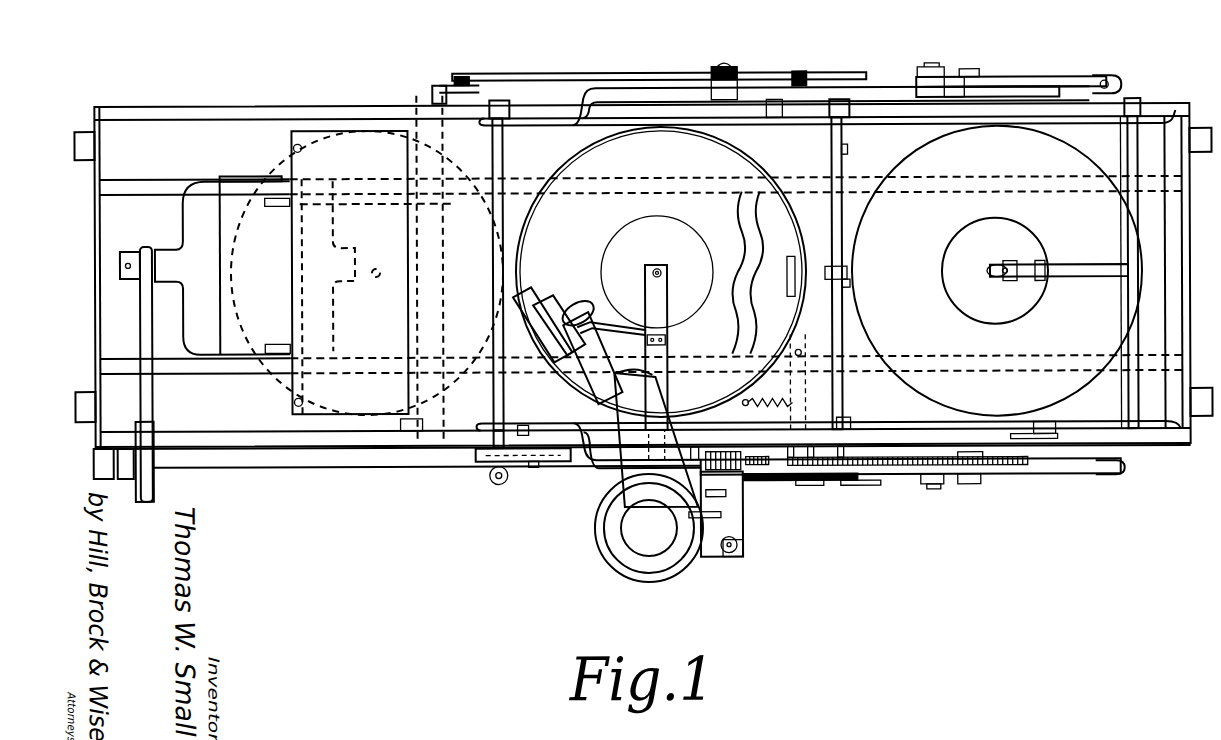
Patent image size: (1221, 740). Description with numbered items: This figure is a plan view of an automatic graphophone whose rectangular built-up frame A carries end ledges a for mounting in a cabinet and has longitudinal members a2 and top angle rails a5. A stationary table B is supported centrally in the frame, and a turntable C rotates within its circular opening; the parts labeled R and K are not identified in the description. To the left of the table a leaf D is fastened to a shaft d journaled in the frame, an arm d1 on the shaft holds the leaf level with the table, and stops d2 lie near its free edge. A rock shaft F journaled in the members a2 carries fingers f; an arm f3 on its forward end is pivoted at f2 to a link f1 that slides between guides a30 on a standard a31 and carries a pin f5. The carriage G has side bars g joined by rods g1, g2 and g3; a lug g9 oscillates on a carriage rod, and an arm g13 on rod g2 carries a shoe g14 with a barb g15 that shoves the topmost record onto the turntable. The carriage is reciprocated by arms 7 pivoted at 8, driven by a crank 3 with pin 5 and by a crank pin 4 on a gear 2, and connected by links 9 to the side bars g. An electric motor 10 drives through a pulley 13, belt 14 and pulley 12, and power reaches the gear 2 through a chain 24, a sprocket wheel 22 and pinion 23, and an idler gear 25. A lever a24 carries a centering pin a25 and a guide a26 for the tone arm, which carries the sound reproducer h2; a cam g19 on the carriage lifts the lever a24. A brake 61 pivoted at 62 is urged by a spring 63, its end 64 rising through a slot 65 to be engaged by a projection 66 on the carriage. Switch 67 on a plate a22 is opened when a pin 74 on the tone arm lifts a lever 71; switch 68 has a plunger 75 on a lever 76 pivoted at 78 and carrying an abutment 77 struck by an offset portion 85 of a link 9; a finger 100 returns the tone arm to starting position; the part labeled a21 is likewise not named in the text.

The frame A is at (93, 243).
The ledges a is at (86, 158).
The longitudinal members a2 is at (1170, 270).
The angle rails a5 is at (306, 106).
The belt 14 is at (139, 327).
The pulley 12 is at (154, 492).
The pulley 13 is at (132, 250).
The electric motor 10 is at (223, 265).
The fingers f is at (274, 205).
The shaft d is at (410, 122).
The arm d1 is at (405, 432).
The stops d2 is at (293, 147).
The leaf D is at (372, 269).
The rock shaft F is at (448, 262).
The rod g1 is at (505, 150).
The carriage G is at (887, 120).
The rod g3 is at (848, 150).
The rod g2 is at (1128, 143).
The side bars g is at (769, 118).
The link f1 is at (620, 92).
The pin f5 is at (824, 74).
The arm f3 is at (446, 84).
The pivot f2 is at (466, 76).
The guides a30 is at (706, 78).
The standard a31 is at (735, 72).
The arms 7 is at (1052, 78).
The pivots 8 is at (928, 530).
The crank 3 is at (955, 78).
The pin 5 is at (978, 72).
The links 9 is at (1093, 84).
The turntable C is at (794, 230).
The stationary table B is at (661, 271).
The wheels R is at (908, 271).
The guide a26 is at (618, 300).
The centering pin a25 is at (658, 268).
The lever a24 is at (670, 318).
The sound reproducer h2 is at (524, 312).
The drum K is at (657, 535).
The cam g19 is at (680, 416).
The brake 61 is at (786, 268).
The pivot 62 is at (801, 350).
The spring 63 is at (767, 390).
The end of brake lever 64 is at (800, 425).
The axle block a21 is at (850, 270).
The lug g9 is at (852, 286).
The arm g13 is at (1074, 266).
The shoe g14 is at (1004, 278).
The barb g15 is at (1006, 264).
The finger 100 is at (1038, 442).
The offset portion 85 is at (581, 470).
The abutment 77 is at (498, 448).
The plunger 75 is at (489, 480).
The switch 68 is at (500, 482).
The lever 76 is at (525, 462).
The pivot 78 is at (535, 470).
The plate a22 is at (743, 520).
The pin 74 is at (722, 512).
The lever 71 is at (740, 544).
The switch 67 is at (732, 558).
The slot 65 is at (777, 472).
The projection 66 is at (816, 488).
The chain 24 is at (807, 486).
The sprocket wheel 22 is at (833, 480).
The pinion 23 is at (848, 490).
The idler gear 25 is at (874, 483).
The gear 2 is at (936, 488).
The crank pin 4 is at (974, 486).